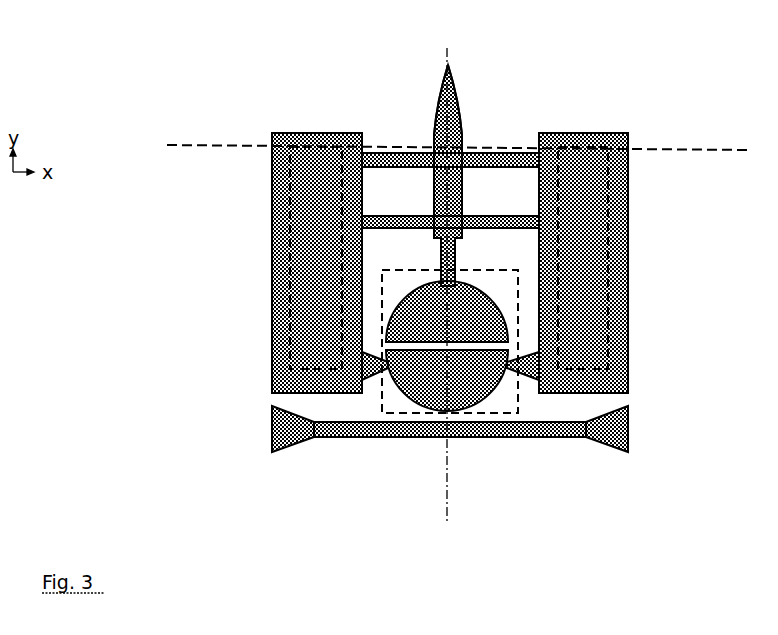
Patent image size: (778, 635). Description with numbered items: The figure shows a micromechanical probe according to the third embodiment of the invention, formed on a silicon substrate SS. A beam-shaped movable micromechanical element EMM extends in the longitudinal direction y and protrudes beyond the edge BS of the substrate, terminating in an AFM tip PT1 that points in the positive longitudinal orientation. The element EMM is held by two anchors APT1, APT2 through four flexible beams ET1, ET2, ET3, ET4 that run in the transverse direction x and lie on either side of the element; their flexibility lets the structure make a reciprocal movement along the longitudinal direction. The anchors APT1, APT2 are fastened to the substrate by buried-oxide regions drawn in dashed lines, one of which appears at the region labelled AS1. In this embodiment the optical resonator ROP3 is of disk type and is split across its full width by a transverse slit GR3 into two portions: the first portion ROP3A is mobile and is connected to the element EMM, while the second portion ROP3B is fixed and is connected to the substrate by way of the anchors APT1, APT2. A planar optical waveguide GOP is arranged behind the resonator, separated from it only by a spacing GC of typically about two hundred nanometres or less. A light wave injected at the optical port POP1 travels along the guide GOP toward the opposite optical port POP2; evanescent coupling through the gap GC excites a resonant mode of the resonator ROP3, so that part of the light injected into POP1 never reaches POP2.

The beam ET1 is at (402, 213).
The beam ET2 is at (507, 152).
The beam ET3 is at (340, 147).
The beam ET4 is at (542, 133).
The AFM tip PT1 is at (460, 108).
The movable micromechanical element EMM is at (477, 150).
The edge of the substrate BS is at (642, 147).
The silicon substrate SS is at (580, 285).
The anchor APT1 is at (270, 140).
The anchor APT2 is at (630, 167).
The first active surface AS1 is at (270, 223).
The first portion of the optical resonator ROP3A is at (493, 298).
The second portion of the optical resonator ROP3B is at (500, 383).
The optical resonator ROP3 is at (576, 305).
The interruption GR3 is at (533, 297).
The spacing GC is at (443, 407).
The planar optical waveguide GOP is at (314, 438).
The optical port POP1 is at (270, 433).
The optical port POP2 is at (622, 453).